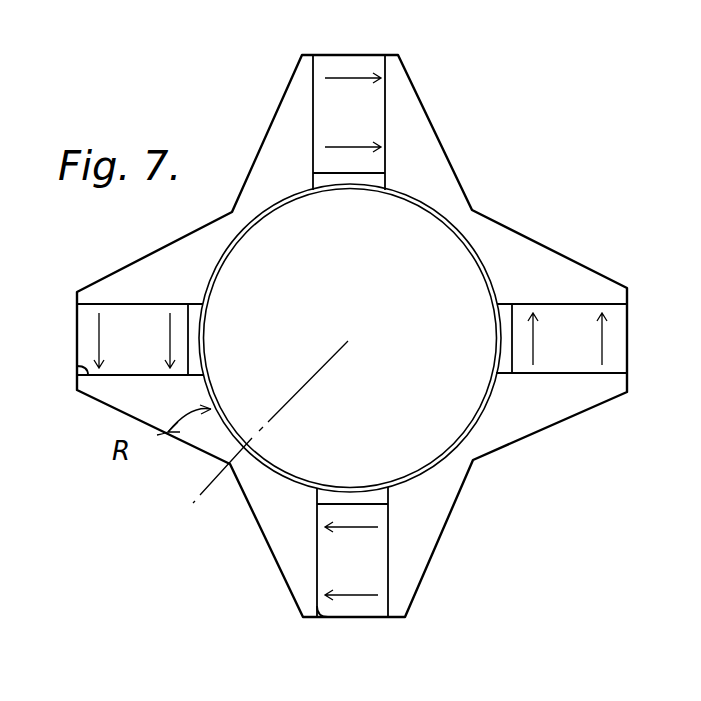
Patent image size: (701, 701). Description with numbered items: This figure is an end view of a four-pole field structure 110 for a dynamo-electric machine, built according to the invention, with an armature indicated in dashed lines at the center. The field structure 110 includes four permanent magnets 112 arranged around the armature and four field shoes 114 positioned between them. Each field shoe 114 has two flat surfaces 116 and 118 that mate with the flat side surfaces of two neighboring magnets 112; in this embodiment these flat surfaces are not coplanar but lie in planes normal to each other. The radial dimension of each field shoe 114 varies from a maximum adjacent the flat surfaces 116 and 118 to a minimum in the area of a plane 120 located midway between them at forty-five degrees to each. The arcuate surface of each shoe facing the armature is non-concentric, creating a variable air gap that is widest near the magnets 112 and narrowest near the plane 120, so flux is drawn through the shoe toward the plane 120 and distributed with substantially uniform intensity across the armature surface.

The four-pole field structure 110 is at (352, 336).
The permanent magnet 112 is at (349, 60).
The field shoe 114 is at (405, 98).
The flat surface 116 is at (330, 613).
The flat surface 118 is at (77, 366).
The plane 120 is at (223, 477).